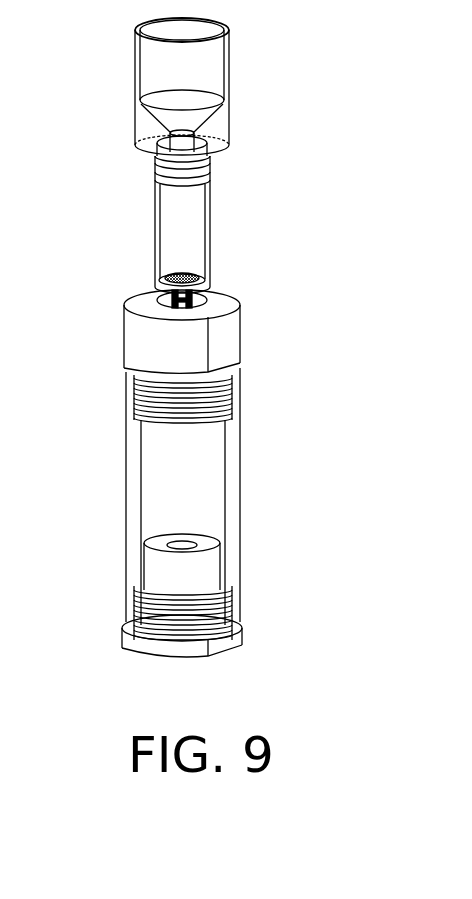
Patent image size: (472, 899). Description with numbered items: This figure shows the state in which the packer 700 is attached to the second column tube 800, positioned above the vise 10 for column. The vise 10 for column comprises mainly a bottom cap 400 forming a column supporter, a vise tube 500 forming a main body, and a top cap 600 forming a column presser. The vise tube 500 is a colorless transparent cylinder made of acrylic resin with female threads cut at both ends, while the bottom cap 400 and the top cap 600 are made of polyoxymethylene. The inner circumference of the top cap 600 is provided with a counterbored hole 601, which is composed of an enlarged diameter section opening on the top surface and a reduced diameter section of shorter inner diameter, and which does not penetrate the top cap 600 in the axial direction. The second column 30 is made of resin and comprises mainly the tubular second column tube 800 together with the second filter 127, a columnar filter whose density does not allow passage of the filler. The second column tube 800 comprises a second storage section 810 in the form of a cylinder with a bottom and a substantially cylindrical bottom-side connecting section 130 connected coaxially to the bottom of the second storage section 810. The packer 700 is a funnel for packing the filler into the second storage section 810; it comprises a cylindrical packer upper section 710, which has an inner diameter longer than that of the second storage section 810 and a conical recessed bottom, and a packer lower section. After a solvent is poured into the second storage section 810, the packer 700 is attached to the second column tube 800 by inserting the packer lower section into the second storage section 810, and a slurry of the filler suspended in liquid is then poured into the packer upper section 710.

The vise for column 10 is at (231, 337).
The second column 30 is at (188, 215).
The second filter 127 is at (207, 288).
The bottom-side connecting section 130 is at (213, 292).
The bottom cap 400 is at (245, 633).
The vise tube 500 is at (242, 452).
The top cap 600 is at (227, 295).
The counterbored hole 601 is at (230, 297).
The packer 700 is at (238, 87).
The packer upper section 710 is at (232, 28).
The second column tube 800 is at (188, 224).
The second storage section 810 is at (213, 212).